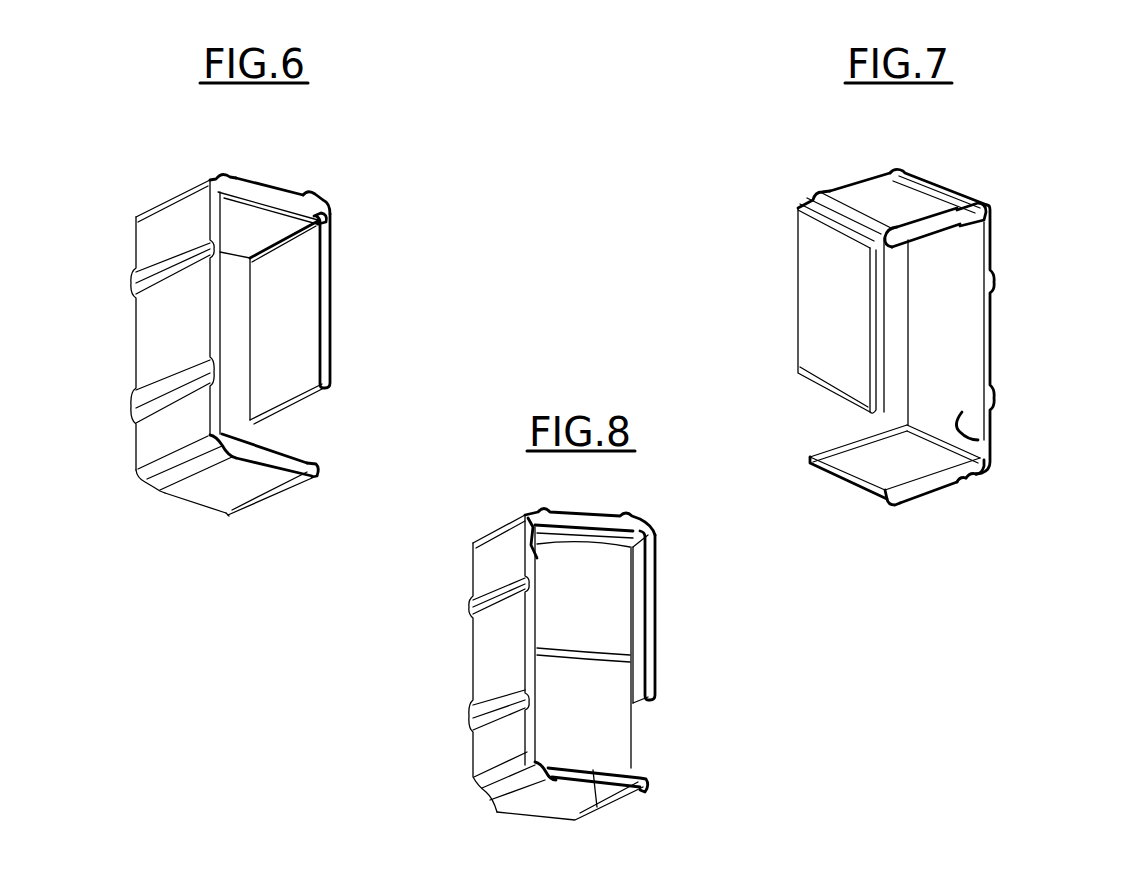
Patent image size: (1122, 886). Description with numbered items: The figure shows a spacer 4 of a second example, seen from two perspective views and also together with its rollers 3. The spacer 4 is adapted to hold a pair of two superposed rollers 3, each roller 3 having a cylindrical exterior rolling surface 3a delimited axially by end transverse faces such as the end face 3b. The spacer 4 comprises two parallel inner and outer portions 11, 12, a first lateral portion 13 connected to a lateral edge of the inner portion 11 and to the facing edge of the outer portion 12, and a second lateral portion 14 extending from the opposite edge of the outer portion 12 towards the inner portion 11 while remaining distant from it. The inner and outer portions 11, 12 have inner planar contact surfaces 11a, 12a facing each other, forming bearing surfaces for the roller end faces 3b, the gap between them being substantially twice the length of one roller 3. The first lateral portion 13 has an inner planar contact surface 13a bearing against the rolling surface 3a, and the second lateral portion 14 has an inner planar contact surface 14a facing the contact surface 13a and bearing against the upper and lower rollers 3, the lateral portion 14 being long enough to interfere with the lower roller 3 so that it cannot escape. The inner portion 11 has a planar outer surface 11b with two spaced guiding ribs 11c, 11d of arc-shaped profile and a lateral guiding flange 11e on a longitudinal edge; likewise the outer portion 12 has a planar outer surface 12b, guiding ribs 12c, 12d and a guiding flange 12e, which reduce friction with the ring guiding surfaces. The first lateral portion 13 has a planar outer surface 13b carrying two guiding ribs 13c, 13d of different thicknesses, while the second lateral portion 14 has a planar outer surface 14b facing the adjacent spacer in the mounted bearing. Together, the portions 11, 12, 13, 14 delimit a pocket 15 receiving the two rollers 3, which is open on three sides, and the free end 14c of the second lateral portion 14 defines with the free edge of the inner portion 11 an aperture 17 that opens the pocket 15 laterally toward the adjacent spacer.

In FIG. 8, the roller 3 is at (619, 693).
In FIG. 8, the rolling surface 3a is at (630, 713).
In FIG. 8, the end transverse face 3b is at (603, 820).
In FIG. 6, the spacer 4 is at (380, 190).
In FIG. 7, the spacer 4 is at (760, 192).
In FIG. 8, the spacer 4 is at (676, 520).
In FIG. 6, the inner portion 11 is at (264, 490).
In FIG. 7, the inner portion 11 is at (899, 489).
In FIG. 8, the inner portion 11 is at (603, 798).
In FIG. 6, the inner planar contact surface 11a is at (312, 460).
In FIG. 7, the inner planar contact surface 11a is at (847, 457).
In FIG. 8, the inner planar contact surface 11a is at (638, 777).
In FIG. 6, the planar outer surface 11b is at (197, 493).
In FIG. 7, the planar outer surface 11b is at (947, 493).
In FIG. 6, the guiding rib 11c is at (287, 498).
In FIG. 7, the guiding rib 11c is at (887, 510).
In FIG. 6, the guiding rib 11d is at (162, 493).
In FIG. 7, the guiding rib 11d is at (970, 490).
In FIG. 6, the lateral guiding flange 11e is at (320, 468).
In FIG. 7, the lateral guiding flange 11e is at (977, 478).
In FIG. 6, the outer portion 12 is at (312, 196).
In FIG. 7, the outer portion 12 is at (912, 183).
In FIG. 8, the outer portion 12 is at (573, 510).
In FIG. 6, the inner planar contact surface 12a is at (270, 223).
In FIG. 8, the inner planar contact surface 12a is at (523, 513).
In FIG. 6, the planar outer surface 12b is at (287, 192).
In FIG. 7, the planar outer surface 12b is at (857, 187).
In FIG. 6, the guiding rib 12c is at (308, 198).
In FIG. 7, the guiding rib 12c is at (820, 195).
In FIG. 6, the guiding rib 12d is at (222, 177).
In FIG. 7, the guiding rib 12d is at (900, 170).
In FIG. 6, the lateral guiding flange 12e is at (318, 205).
In FIG. 7, the lateral guiding flange 12e is at (963, 218).
In FIG. 6, the lateral portion 13 is at (152, 335).
In FIG. 7, the lateral portion 13 is at (1008, 339).
In FIG. 8, the lateral portion 13 is at (479, 663).
In FIG. 6, the inner planar contact surface 13a is at (210, 436).
In FIG. 7, the inner planar contact surface 13a is at (953, 440).
In FIG. 8, the inner planar contact surface 13a is at (543, 743).
In FIG. 6, the planar outer surface 13b is at (138, 320).
In FIG. 7, the planar outer surface 13b is at (993, 312).
In FIG. 6, the guiding rib 13c is at (132, 402).
In FIG. 7, the guiding rib 13c is at (997, 395).
In FIG. 8, the guiding rib 13c is at (499, 710).
In FIG. 6, the guiding rib 13d is at (134, 283).
In FIG. 7, the guiding rib 13d is at (993, 275).
In FIG. 8, the guiding rib 13d is at (499, 596).
In FIG. 6, the second lateral portion 14 is at (315, 319).
In FIG. 7, the second lateral portion 14 is at (796, 310).
In FIG. 8, the second lateral portion 14 is at (674, 617).
In FIG. 6, the inner planar contact surface 14a is at (303, 327).
In FIG. 8, the inner planar contact surface 14a is at (640, 682).
In FIG. 7, the planar outer surface 14b is at (812, 290).
In FIG. 6, the free end 14c is at (307, 390).
In FIG. 7, the free end 14c is at (812, 387).
In FIG. 6, the pocket 15 is at (233, 313).
In FIG. 7, the pocket 15 is at (893, 342).
In FIG. 6, the aperture 17 is at (302, 425).
In FIG. 7, the aperture 17 is at (812, 424).
In FIG. 8, the aperture 17 is at (633, 740).